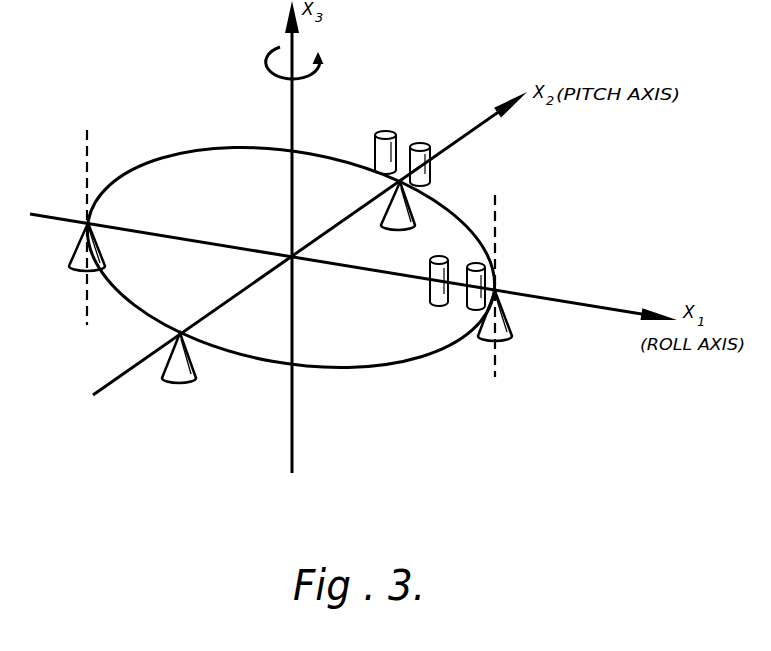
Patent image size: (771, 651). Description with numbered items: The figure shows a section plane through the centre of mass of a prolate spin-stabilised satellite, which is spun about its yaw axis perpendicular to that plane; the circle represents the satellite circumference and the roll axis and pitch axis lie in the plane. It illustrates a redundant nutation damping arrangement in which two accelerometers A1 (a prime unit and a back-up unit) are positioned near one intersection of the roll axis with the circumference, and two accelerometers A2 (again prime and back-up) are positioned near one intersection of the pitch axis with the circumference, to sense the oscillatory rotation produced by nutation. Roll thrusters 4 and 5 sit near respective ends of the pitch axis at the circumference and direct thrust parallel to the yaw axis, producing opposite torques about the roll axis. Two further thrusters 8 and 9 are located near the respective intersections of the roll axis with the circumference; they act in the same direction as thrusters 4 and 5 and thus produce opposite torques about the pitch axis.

The nutation compensating thruster 4 is at (418, 214).
The nutation compensating thruster 5 is at (177, 385).
The thruster 8 is at (513, 334).
The thruster 9 is at (82, 275).
The accelerometer A1 is at (412, 145).
The accelerometer A2 is at (376, 135).